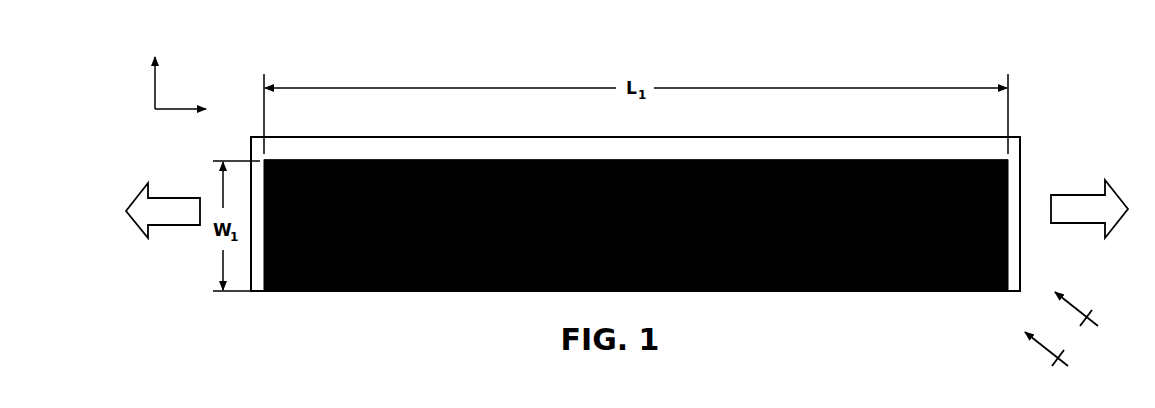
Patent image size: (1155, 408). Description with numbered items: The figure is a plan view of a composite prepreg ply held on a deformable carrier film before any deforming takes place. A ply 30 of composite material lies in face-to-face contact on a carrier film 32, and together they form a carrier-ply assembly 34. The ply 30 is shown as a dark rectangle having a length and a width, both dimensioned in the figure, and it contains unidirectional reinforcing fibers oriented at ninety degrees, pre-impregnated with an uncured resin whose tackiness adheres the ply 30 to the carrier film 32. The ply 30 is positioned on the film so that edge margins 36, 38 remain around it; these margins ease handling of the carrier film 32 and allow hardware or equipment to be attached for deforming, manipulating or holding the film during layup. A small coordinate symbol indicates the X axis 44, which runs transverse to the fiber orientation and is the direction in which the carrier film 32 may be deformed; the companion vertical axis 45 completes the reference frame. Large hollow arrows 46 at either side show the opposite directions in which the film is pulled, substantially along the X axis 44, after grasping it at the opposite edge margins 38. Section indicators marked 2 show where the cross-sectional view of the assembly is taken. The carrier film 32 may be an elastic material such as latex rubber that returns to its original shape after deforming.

The ply 30 is at (358, 285).
The carrier film 32 is at (758, 140).
The carrier-ply assembly 34 is at (906, 105).
The edge margin 36 is at (497, 145).
The edge margin 38 is at (1005, 165).
The X axis 44 is at (165, 101).
The Y axis 45 is at (147, 80).
The arrows 46 is at (167, 204).
The section line 2- 2 is at (1069, 335).